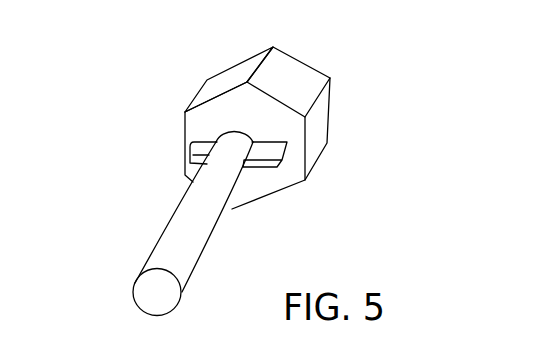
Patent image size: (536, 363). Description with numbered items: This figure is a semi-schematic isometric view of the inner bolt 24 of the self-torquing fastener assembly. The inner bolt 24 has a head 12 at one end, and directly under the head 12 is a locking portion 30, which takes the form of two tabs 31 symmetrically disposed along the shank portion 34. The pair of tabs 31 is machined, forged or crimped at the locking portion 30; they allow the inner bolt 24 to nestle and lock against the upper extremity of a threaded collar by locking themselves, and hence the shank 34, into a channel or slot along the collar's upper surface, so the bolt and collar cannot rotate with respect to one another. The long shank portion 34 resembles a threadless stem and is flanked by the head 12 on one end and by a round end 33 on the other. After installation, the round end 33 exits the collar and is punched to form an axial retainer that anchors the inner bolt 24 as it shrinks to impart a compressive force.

The head 12 is at (236, 180).
The inner bolt 24 is at (346, 108).
The locking portion 30 is at (285, 163).
The tabs 31 is at (197, 155).
The round end 33 is at (147, 292).
The shank portion 34 is at (202, 232).